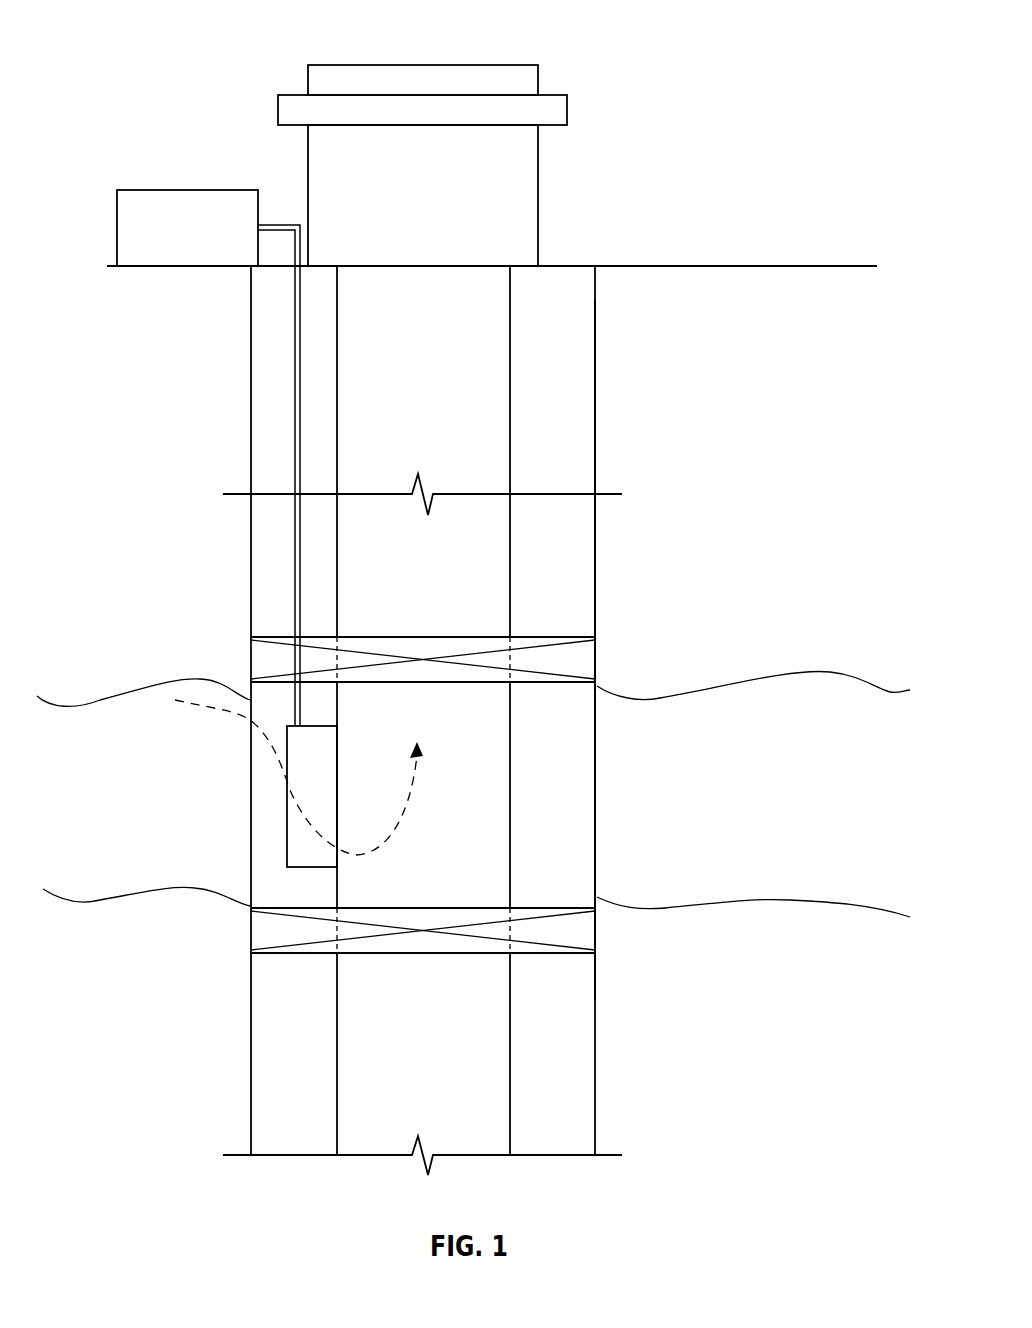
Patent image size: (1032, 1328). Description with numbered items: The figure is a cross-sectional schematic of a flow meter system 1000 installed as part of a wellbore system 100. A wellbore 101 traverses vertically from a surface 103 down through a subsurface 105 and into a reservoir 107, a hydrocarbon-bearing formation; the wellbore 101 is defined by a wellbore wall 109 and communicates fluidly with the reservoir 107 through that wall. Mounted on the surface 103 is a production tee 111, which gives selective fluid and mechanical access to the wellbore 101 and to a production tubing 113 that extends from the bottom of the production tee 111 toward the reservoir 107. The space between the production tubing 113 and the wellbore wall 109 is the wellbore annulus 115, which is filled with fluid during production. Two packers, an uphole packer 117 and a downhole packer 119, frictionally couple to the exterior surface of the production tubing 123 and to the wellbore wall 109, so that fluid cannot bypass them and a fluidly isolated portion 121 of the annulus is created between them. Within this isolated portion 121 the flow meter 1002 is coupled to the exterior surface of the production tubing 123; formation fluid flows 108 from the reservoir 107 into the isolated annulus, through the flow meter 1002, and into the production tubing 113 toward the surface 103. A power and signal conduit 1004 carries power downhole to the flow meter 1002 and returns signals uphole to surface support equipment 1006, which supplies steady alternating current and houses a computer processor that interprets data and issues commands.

The wellbore system 100 is at (815, 24).
The wellbore 101 is at (558, 380).
The surface 103 is at (784, 266).
The subsurface 105 is at (790, 334).
The reservoir 107 is at (150, 736).
The formation fluid flow 108 is at (270, 753).
The wellbore wall 109 is at (598, 505).
The production tee 111 is at (538, 185).
The production tubing 113 is at (473, 984).
The wellbore annulus 115 is at (558, 553).
The uphole packer 117 is at (262, 658).
The downhole packer 119 is at (268, 932).
The fluidly isolated portion of the wellbore annulus 121 is at (657, 667).
The exterior surface of the production tubing 123 is at (510, 1073).
The flow meter system 1000 is at (158, 103).
The flow meter 1002 is at (287, 806).
The power and signal conduit 1004 is at (295, 400).
The surface support equipment 1006 is at (215, 241).